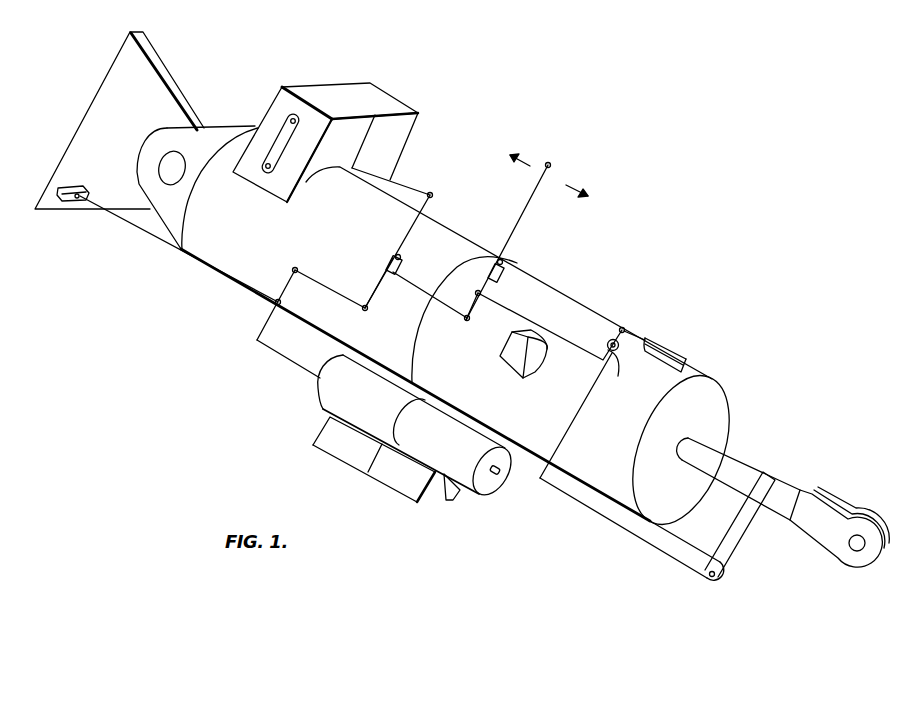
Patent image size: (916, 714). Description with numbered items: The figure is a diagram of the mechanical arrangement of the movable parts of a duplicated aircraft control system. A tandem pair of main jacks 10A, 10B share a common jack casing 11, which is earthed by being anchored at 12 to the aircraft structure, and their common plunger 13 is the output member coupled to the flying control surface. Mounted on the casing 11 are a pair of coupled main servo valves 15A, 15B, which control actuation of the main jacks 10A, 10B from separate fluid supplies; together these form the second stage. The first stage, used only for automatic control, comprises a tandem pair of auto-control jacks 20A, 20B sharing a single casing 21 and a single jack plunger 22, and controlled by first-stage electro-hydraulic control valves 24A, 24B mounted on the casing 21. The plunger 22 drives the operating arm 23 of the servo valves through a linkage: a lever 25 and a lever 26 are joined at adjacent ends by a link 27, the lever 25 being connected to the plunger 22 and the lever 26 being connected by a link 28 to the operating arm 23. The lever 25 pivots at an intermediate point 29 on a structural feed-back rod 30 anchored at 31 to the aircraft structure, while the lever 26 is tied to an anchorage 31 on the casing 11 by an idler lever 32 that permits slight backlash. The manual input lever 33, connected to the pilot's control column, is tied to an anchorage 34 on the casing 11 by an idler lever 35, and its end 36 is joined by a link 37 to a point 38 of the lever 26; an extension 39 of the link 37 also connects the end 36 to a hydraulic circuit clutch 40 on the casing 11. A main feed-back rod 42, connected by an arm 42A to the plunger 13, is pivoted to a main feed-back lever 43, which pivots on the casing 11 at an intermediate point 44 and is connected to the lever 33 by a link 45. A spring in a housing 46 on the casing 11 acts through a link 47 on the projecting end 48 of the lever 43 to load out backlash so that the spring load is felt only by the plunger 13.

The main jack 10A is at (432, 226).
The main jack 10B is at (572, 296).
The common jack casing 11 is at (624, 329).
The anchorage 12 is at (153, 95).
The common plunger 13 is at (733, 465).
The main servo valve 15A is at (273, 108).
The main servo valve 15B is at (400, 129).
The auto-control jack 20A is at (318, 388).
The auto-control jack 20B is at (488, 488).
The casing 21 is at (447, 500).
The jack plunger 22 is at (273, 350).
The operating arm 23 is at (285, 152).
The electro-hydraulic control valve 24A is at (320, 432).
The electro-hydraulic control valve 24B is at (390, 486).
The lever 25 is at (285, 288).
The lever 26 is at (372, 302).
The link 27 is at (328, 283).
The link 28 is at (395, 172).
The intermediate point 29 is at (276, 304).
The structural feed-back rod 30 is at (137, 228).
The anchorage 31 is at (72, 200).
The idler lever 32 is at (402, 253).
The manual input lever 33 is at (521, 218).
The anchorage 34 is at (503, 281).
The idler lever 35 is at (500, 262).
The end 36 is at (466, 321).
The link 37 is at (442, 306).
The point 38 is at (387, 268).
The extension 39 is at (492, 340).
The hydraulic circuit clutch 40 is at (533, 357).
The main feed-back rod 42 is at (630, 530).
The arm 42A is at (738, 542).
The main feed-back lever 43 is at (580, 408).
The intermediate point 44 is at (622, 372).
The link 45 is at (577, 340).
The housing 46 is at (678, 352).
The link 47 is at (655, 341).
The projecting end 48 is at (630, 328).